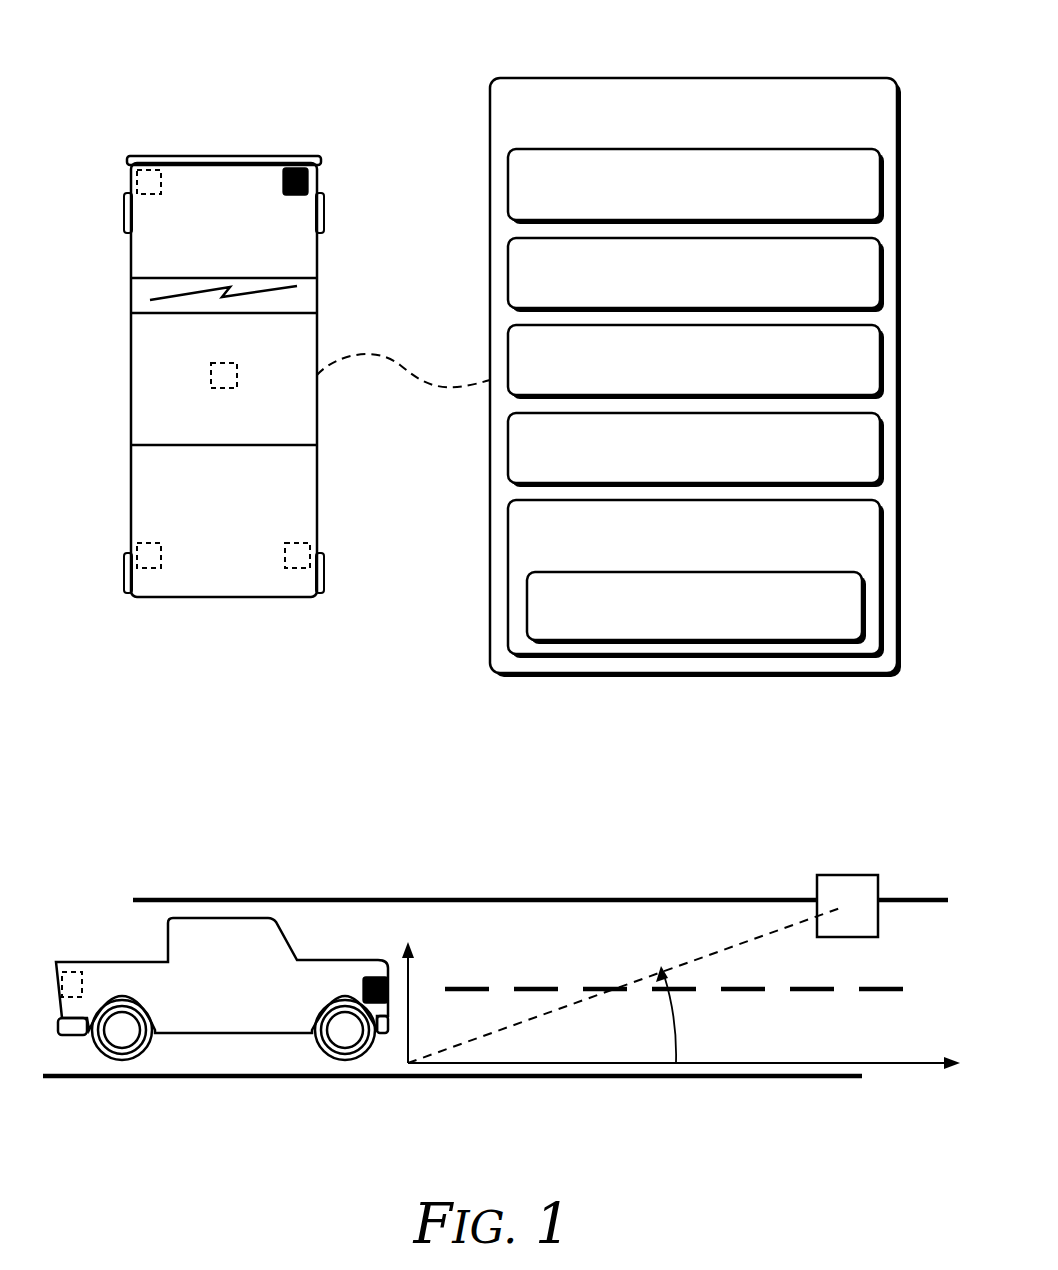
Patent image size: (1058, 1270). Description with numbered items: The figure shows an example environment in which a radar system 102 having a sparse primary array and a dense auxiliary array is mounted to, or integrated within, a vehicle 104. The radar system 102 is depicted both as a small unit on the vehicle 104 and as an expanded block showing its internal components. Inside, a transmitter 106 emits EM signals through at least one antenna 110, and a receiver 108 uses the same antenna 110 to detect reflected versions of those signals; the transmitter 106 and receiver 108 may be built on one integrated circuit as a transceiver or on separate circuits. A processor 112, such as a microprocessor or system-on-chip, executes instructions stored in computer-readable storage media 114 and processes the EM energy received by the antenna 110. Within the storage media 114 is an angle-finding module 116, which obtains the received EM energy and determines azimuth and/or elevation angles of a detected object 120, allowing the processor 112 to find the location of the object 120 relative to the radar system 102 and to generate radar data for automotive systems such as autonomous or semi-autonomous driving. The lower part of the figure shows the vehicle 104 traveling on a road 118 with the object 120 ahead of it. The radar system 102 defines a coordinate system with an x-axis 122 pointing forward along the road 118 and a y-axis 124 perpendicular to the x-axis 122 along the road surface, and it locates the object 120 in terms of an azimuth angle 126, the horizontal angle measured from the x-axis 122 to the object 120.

The radar system 102 is at (368, 980).
The vehicle 104 is at (258, 153).
The transmitter 106 is at (696, 186).
The receiver 108 is at (696, 275).
The antenna 110 is at (696, 362).
The processor 112 is at (696, 450).
The computer-readable storage media 114 is at (696, 579).
The angle-finding module 116 is at (696, 608).
The road 118 is at (470, 897).
The object 120 is at (848, 875).
The x-axis 122 is at (888, 1066).
The y-axis 124 is at (407, 1027).
The azimuth angle 126 is at (677, 1045).